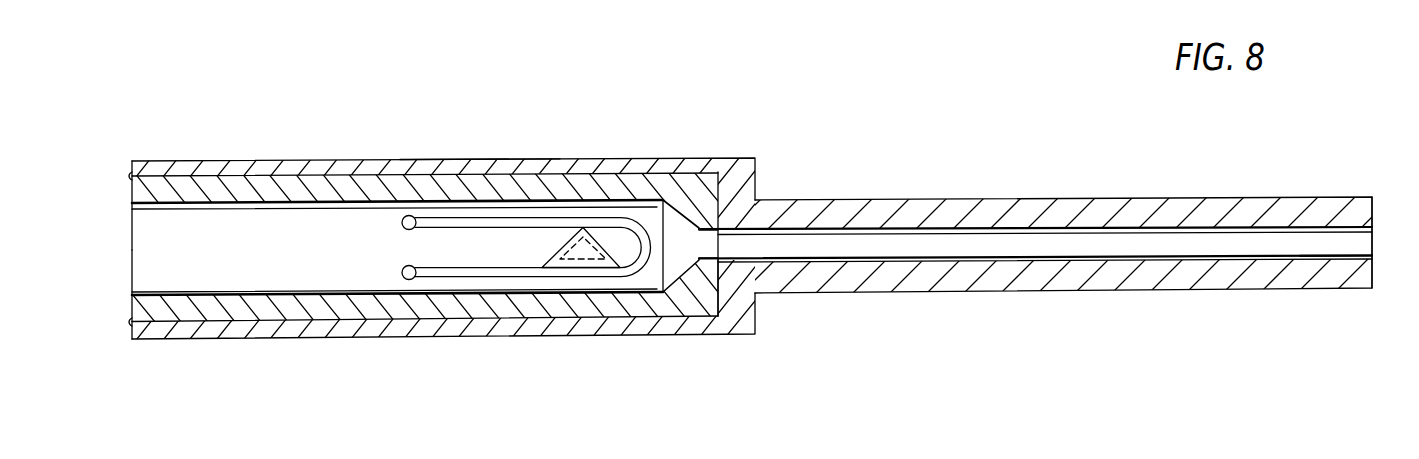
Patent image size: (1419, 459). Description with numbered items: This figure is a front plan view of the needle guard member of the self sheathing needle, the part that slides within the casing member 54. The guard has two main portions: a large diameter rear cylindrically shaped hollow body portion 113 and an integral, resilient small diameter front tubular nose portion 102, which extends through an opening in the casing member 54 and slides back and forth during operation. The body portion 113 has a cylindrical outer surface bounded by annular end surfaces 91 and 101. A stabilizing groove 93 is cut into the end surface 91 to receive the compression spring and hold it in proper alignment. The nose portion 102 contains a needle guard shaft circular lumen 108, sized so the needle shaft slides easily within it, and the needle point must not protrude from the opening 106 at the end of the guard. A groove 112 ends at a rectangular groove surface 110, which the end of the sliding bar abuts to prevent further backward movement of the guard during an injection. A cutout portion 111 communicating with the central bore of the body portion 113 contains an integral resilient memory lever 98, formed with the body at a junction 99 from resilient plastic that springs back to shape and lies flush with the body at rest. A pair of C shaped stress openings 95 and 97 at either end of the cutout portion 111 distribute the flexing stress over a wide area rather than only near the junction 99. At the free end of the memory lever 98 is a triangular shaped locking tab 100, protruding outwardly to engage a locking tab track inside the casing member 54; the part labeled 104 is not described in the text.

The casing member 54 is at (483, 150).
The annular end surface 91 is at (131, 176).
The stabilizing groove 93 is at (131, 323).
The C shaped stress opening 95 is at (409, 280).
The C shaped stress opening 97 is at (409, 215).
The memory lever 98 is at (445, 250).
The junction 99 is at (405, 248).
The triangular shaped locking tab 100 is at (583, 256).
The annular end surface 101 is at (756, 175).
The tubular nose portion 102 is at (1028, 199).
The shaft end 104 is at (1372, 210).
The opening 106 is at (1320, 244).
The needle guard shaft circular lumen 108 is at (1024, 248).
The rectangular groove surface 110 is at (720, 283).
The cutout portion 111 is at (494, 273).
The groove 112 is at (535, 187).
The rear hollow body portion 113 is at (247, 161).